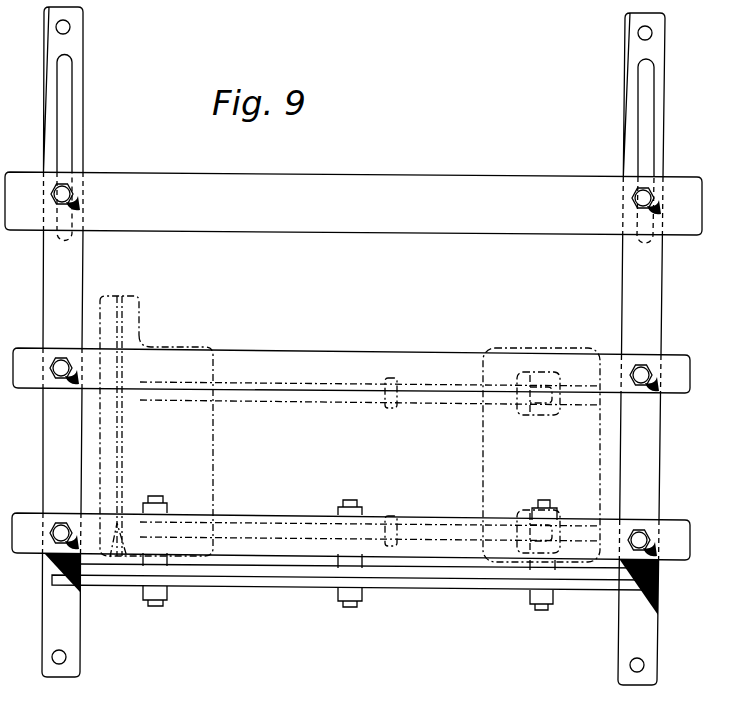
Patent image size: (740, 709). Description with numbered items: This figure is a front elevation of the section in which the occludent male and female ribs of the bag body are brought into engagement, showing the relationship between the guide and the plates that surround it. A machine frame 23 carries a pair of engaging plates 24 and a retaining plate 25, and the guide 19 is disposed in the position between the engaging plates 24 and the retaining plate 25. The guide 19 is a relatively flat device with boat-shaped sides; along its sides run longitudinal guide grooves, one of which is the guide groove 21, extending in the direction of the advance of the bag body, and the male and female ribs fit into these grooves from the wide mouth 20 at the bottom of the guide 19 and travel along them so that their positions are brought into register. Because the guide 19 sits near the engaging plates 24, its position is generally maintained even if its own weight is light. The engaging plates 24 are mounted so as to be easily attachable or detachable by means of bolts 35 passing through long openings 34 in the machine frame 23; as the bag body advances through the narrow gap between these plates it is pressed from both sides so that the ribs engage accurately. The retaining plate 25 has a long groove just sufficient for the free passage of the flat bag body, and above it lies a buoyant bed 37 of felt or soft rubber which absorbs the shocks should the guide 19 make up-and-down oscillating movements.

The guide 19 is at (213, 462).
The wide mouth 20 is at (120, 557).
The guide groove 21 is at (120, 462).
The machine frame 23 is at (84, 70).
The engaging plates 24 is at (227, 178).
The retaining plate 25 is at (283, 587).
The long openings 34 is at (70, 110).
The bolts 35 is at (63, 186).
The buoyant bed 37 is at (211, 568).